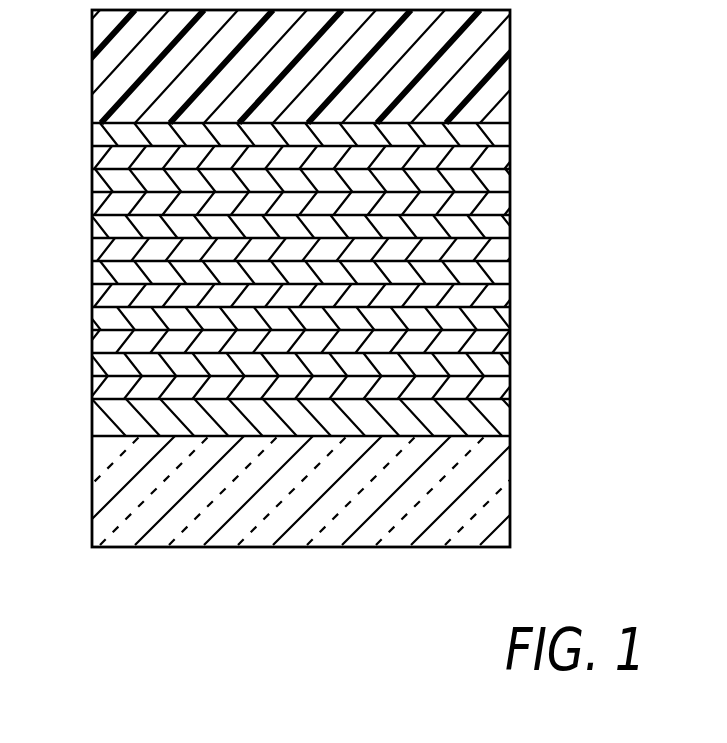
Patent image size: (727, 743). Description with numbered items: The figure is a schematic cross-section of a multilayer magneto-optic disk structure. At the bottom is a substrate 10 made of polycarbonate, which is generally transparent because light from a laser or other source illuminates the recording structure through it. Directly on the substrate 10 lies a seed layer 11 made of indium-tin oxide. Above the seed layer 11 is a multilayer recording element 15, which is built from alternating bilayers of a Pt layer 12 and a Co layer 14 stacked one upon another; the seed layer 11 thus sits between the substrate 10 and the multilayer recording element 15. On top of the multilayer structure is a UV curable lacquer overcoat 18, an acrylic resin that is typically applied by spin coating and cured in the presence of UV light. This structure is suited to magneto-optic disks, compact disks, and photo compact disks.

The substrate 10 is at (100, 490).
The seed layer 11 is at (100, 420).
The Pt layer 12 is at (100, 392).
The Co layer 14 is at (100, 367).
The multilayer recording element 15 is at (563, 130).
The UV curable lacquer overcoat 18 is at (99, 106).